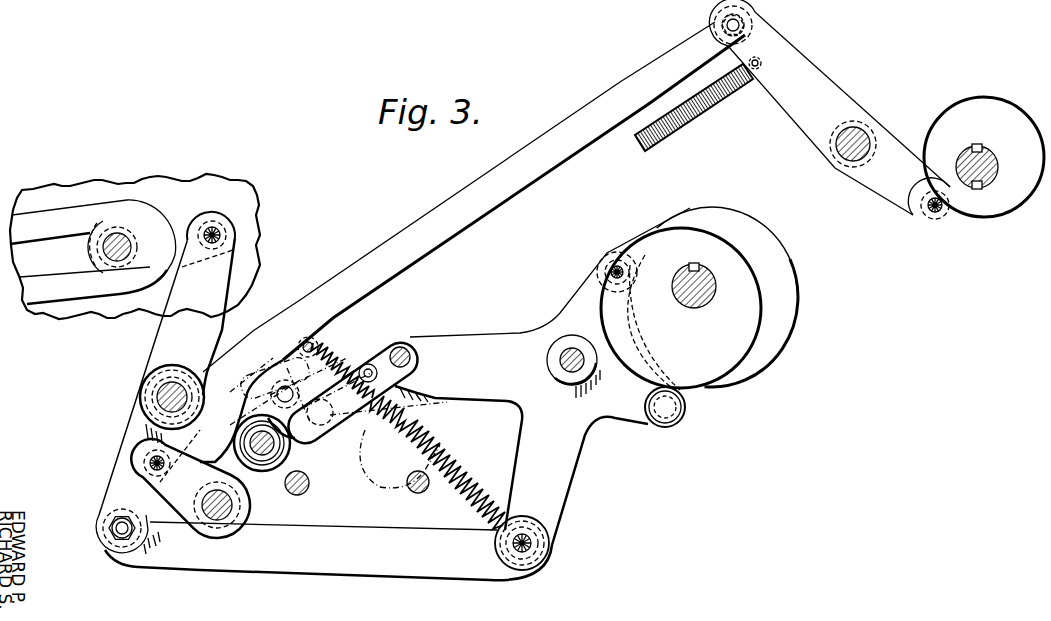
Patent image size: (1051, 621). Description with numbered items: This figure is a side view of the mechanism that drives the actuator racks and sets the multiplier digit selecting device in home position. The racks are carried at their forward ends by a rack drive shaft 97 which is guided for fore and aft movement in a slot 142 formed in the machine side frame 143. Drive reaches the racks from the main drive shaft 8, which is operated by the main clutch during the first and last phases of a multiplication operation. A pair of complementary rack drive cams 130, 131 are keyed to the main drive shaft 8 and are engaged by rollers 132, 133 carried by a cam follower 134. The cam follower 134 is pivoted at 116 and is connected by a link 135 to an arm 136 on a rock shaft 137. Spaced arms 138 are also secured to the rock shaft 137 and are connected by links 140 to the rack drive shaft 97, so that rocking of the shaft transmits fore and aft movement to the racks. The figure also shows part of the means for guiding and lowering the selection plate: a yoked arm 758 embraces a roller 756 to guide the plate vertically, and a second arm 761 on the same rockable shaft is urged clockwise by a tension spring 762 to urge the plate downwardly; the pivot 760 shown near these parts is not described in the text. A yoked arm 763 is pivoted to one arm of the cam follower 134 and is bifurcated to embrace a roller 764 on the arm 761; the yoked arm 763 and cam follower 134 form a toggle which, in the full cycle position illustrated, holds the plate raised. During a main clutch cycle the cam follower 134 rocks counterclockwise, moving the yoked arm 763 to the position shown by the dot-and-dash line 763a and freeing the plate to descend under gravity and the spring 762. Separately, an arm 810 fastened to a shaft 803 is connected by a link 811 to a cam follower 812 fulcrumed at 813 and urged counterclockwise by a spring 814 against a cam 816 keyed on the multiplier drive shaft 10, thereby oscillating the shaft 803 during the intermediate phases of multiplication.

The main drive shaft 8 is at (695, 308).
The multiplier drive shaft 10 is at (996, 160).
The rack drive shaft 97 is at (103, 250).
The pivot 116 is at (567, 377).
The rack drive cam 130 is at (663, 236).
The rack drive cam 131 is at (775, 237).
The roller 132 is at (666, 427).
The roller 133 is at (617, 260).
The cam follower 134 is at (577, 481).
The link 135 is at (467, 568).
The arm 136 is at (110, 482).
The rock shaft 137 is at (158, 397).
The spaced arms 138 is at (150, 361).
The link 140 is at (184, 222).
The slot 142 is at (52, 244).
The machine side frame 143 is at (252, 190).
The roller 756 is at (407, 345).
The yoked arm 758 is at (377, 343).
The pivot stud 760 is at (248, 444).
The arm 761 is at (305, 342).
The tension spring 762 is at (460, 452).
The yoked arm 763 is at (347, 348).
The dot-and-dash line position of yoked arm 763a is at (306, 477).
The roller 764 is at (292, 333).
The shaft 803 is at (233, 508).
The arm 810 is at (154, 490).
The link 811 is at (447, 237).
The cam follower 812 is at (812, 74).
The fulcrum 813 is at (860, 137).
The spring 814 is at (702, 108).
The cam 816 is at (1006, 92).